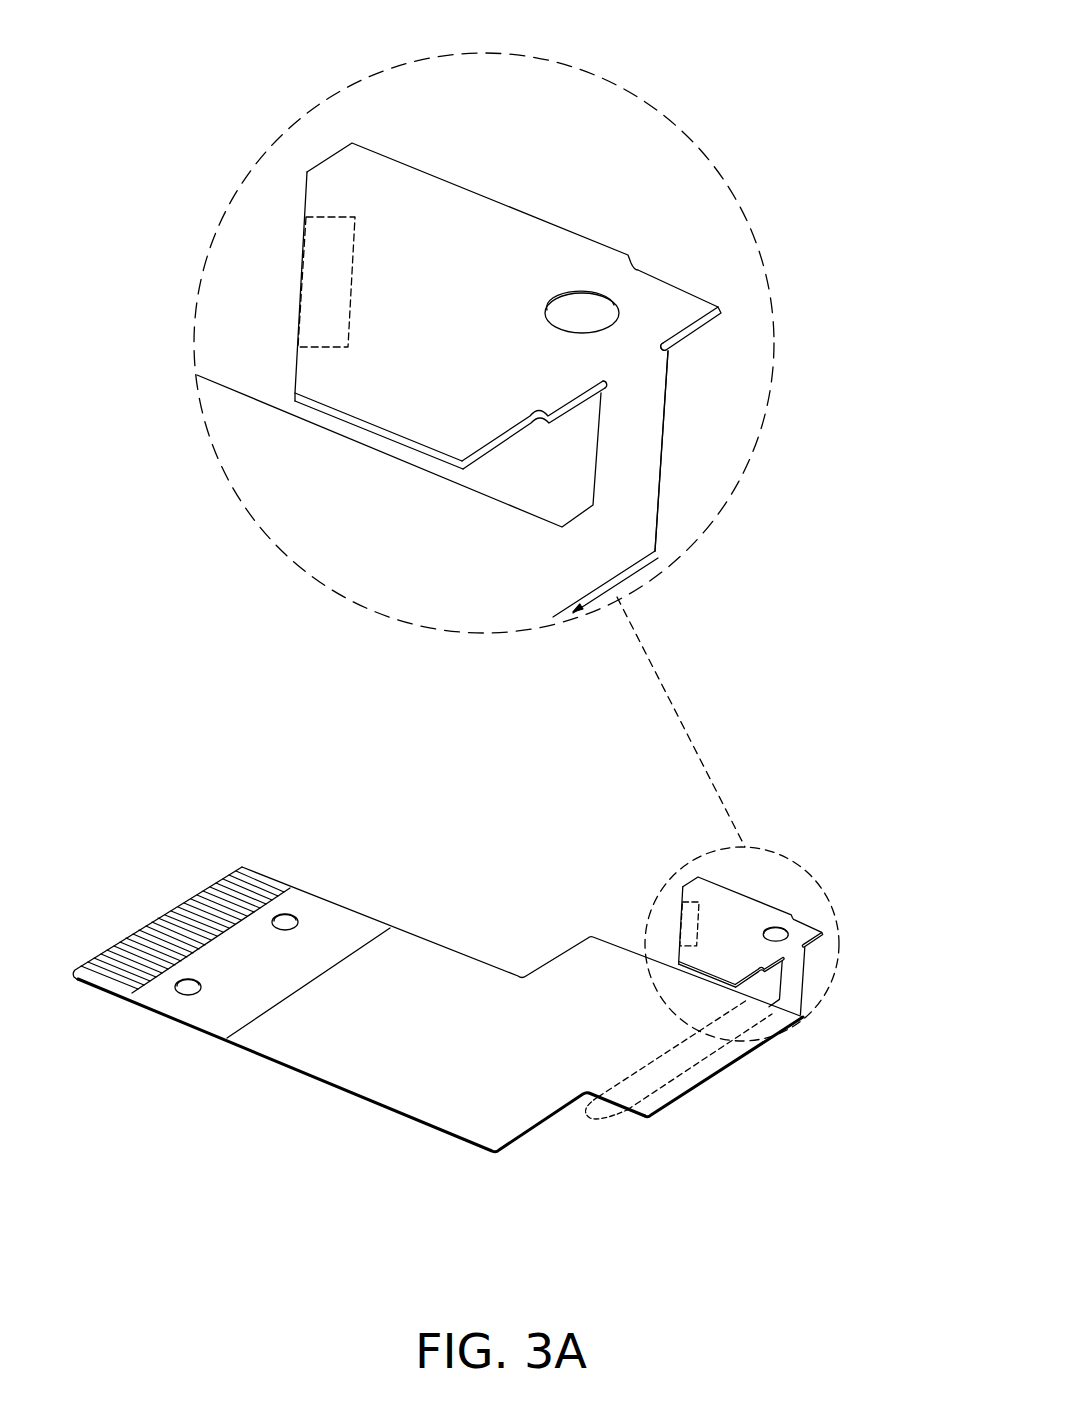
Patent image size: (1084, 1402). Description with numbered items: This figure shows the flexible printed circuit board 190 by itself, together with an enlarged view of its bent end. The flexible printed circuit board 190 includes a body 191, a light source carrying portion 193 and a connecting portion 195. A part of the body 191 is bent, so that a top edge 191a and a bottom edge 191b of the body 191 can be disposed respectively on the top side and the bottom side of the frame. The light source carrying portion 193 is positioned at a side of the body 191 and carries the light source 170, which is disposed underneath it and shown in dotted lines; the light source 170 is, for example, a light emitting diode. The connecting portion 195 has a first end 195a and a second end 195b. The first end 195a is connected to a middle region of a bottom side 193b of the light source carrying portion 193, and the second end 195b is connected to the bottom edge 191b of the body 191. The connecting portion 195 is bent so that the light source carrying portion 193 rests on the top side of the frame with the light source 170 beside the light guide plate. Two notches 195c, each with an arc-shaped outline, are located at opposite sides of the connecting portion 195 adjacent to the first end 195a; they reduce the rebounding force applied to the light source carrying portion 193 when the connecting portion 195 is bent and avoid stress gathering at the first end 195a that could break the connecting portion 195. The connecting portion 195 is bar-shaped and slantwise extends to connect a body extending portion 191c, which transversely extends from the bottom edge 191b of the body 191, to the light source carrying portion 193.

The flexible printed circuit board 190 is at (922, 44).
The light source 170 is at (317, 322).
The light source carrying portion 193 is at (432, 195).
The bottom side of the light source carrying portion 193b is at (712, 322).
The connecting portion 195 is at (650, 442).
The first end 195a is at (652, 378).
The second end 195b is at (643, 508).
The notches 195c is at (676, 350).
The body 191 is at (337, 1053).
The top edge 191a is at (217, 872).
The bottom edge 191b is at (683, 1097).
The body extending portion 191c is at (790, 1008).